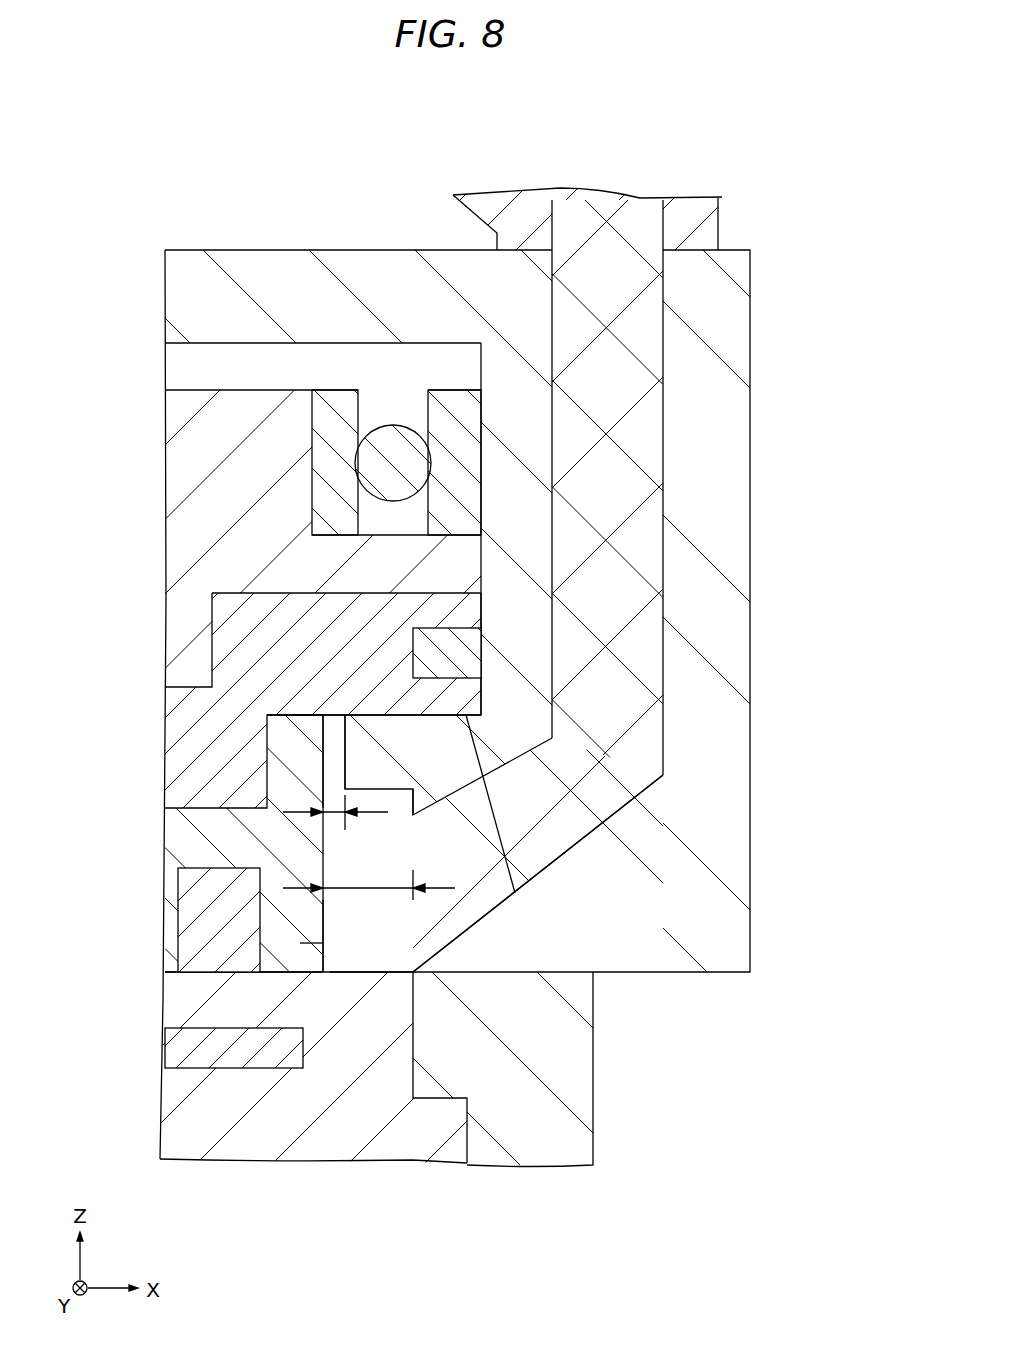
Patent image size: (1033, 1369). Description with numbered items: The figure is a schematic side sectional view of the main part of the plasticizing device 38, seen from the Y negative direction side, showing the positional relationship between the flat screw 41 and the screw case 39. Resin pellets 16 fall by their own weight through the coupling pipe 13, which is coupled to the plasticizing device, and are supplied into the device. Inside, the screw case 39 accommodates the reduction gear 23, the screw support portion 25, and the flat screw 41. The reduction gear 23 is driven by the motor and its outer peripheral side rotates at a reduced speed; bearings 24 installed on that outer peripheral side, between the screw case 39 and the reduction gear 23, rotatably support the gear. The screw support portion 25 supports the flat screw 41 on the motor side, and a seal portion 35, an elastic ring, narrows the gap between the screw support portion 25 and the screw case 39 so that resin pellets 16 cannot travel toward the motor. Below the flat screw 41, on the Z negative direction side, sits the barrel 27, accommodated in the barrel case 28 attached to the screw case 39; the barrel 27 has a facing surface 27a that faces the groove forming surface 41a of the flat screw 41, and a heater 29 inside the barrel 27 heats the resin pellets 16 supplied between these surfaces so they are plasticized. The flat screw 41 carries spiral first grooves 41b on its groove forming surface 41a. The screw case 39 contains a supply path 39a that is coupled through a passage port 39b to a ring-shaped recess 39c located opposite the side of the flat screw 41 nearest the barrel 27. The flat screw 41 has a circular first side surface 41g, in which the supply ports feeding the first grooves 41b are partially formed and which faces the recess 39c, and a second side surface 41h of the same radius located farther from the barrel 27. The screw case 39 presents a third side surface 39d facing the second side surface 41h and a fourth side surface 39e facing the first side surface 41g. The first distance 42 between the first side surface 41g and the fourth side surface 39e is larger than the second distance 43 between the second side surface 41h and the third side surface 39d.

The plasticizing device 38 is at (731, 141).
The screw case 39 is at (236, 258).
The supply path 39a is at (660, 306).
The passage port 39b is at (425, 912).
The recess 39c is at (350, 947).
The third side surface 39d is at (343, 734).
The fourth side surface 39e is at (406, 806).
The resin pellets 16 is at (640, 432).
The coupling pipe 13 is at (705, 225).
The reduction gear 23 is at (180, 545).
The bearings 24 is at (440, 386).
The screw support portion 25 is at (180, 710).
The seal portion 35 is at (487, 650).
The flat screw 41 is at (185, 848).
The groove forming surface 41a is at (297, 975).
The first grooves 41b is at (205, 892).
The first side surface 41g is at (330, 943).
The second side surface 41h is at (330, 772).
The first distance 42 is at (392, 897).
The second distance 43 is at (343, 823).
The barrel 27 is at (258, 1140).
The facing surface 27a is at (385, 972).
The barrel case 28 is at (575, 1072).
The heater 29 is at (165, 1050).